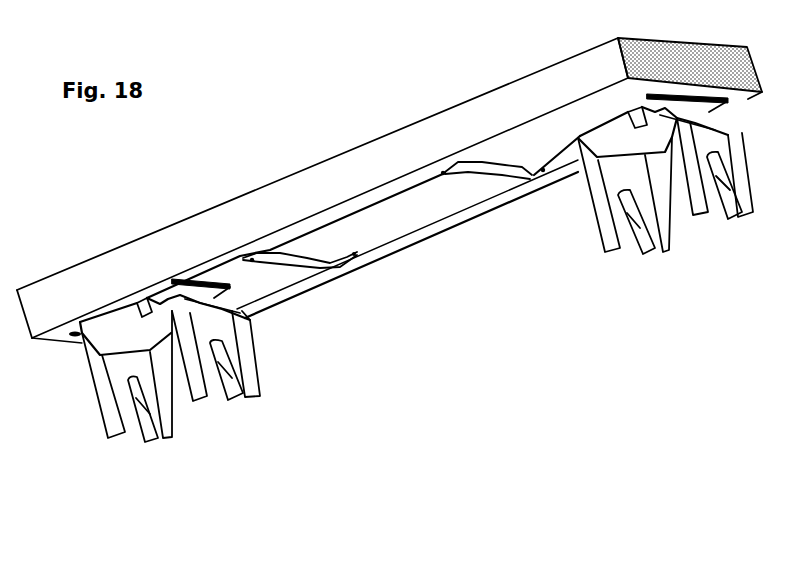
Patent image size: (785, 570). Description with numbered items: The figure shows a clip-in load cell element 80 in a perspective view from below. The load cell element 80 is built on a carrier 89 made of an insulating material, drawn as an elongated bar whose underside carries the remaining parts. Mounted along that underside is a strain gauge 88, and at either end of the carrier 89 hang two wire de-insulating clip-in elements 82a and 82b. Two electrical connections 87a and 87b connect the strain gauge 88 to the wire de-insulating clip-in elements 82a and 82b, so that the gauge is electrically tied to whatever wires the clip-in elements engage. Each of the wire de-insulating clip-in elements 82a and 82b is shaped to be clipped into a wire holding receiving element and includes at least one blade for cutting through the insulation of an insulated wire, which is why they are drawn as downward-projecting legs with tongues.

The clip-in load cell element 80 is at (380, 346).
The wire de-insulating clip-in element 82a is at (724, 150).
The wire de-insulating clip-in element 82b is at (101, 383).
The electrical connection 87a is at (545, 170).
The electrical connection 87b is at (236, 266).
The strain gauge 88 is at (405, 213).
The carrier 89 is at (320, 188).